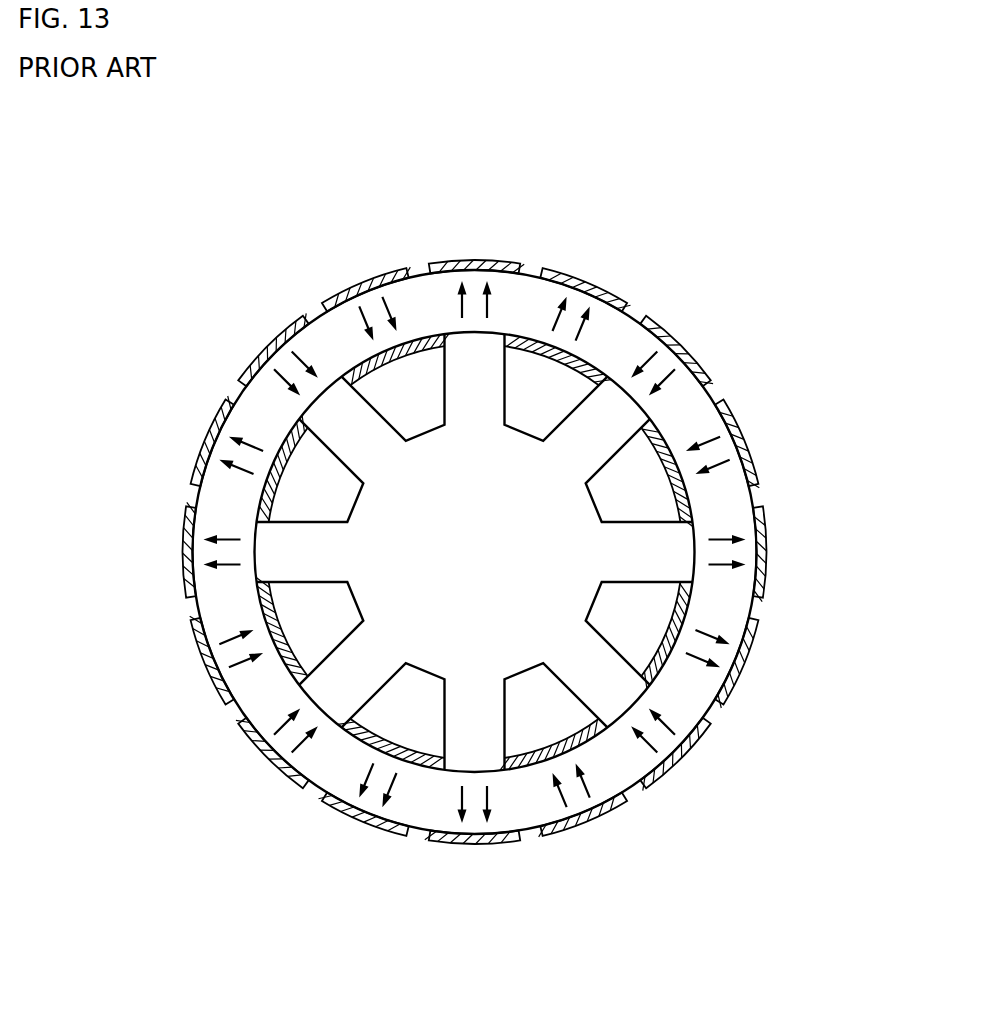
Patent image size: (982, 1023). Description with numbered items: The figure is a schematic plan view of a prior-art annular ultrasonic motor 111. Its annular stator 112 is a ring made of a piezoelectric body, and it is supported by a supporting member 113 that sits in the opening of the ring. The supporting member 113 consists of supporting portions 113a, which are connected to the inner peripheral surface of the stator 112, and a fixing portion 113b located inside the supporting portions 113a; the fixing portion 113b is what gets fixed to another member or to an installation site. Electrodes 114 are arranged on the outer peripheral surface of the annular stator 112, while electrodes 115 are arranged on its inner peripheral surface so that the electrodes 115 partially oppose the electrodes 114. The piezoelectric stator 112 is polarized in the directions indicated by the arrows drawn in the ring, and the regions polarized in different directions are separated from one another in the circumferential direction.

The annular ultrasonic motor 111 is at (175, 312).
The annular stator 112 is at (636, 311).
The supporting member 113 is at (562, 472).
The supporting portions 113a is at (580, 423).
The fixing portion 113b is at (540, 588).
The electrodes 114 is at (482, 260).
The electrodes 115 is at (291, 442).